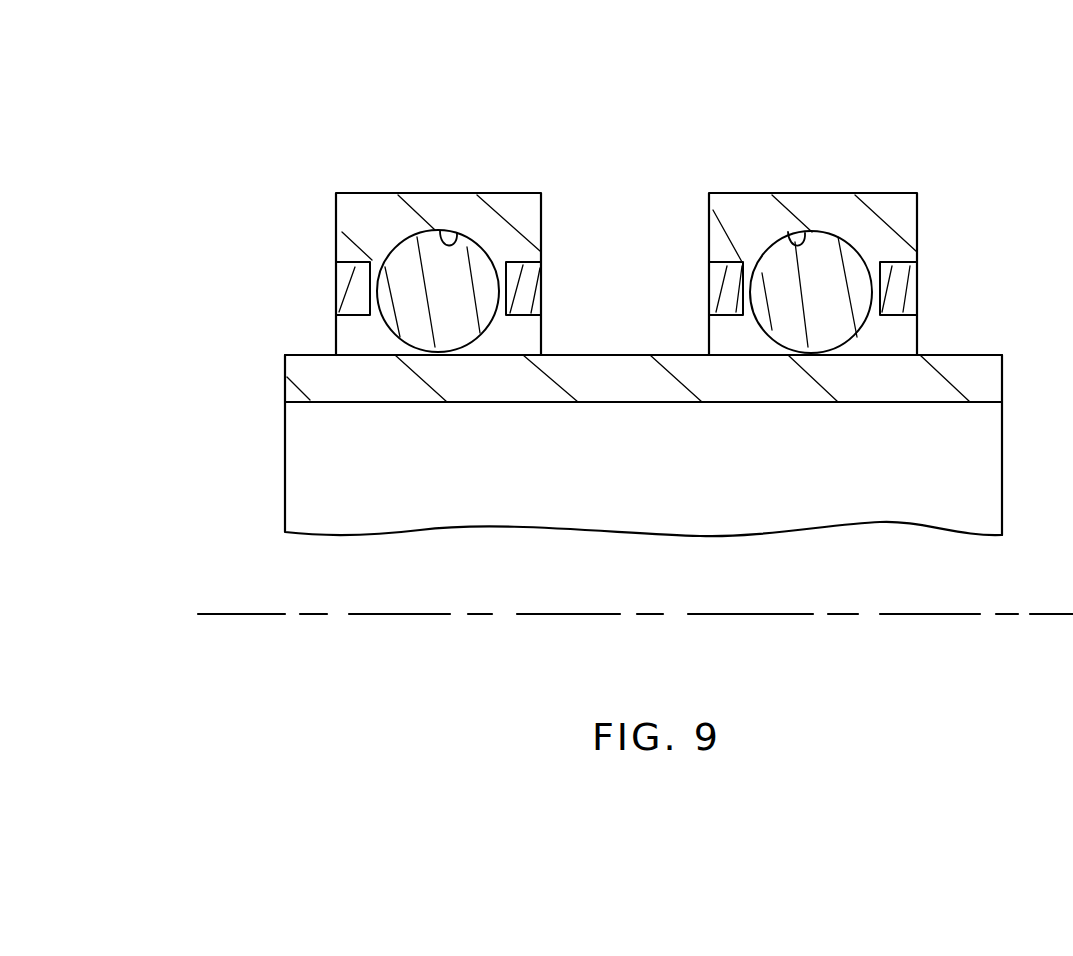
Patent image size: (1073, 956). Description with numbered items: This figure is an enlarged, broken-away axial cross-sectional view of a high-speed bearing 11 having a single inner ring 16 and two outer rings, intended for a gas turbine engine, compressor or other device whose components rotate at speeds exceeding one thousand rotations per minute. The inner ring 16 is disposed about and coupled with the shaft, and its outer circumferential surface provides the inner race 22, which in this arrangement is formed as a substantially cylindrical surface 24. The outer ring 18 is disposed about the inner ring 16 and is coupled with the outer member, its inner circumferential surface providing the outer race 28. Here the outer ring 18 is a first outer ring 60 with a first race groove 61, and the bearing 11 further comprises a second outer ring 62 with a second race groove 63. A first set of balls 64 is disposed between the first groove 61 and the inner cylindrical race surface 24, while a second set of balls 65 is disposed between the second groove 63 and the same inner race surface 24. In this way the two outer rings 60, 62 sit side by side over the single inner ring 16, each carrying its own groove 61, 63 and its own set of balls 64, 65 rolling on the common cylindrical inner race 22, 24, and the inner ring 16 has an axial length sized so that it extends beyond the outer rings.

The bearing 11 is at (238, 81).
The inner ring 16 is at (276, 384).
The outer ring 18 is at (630, 236).
The inner race 22 is at (620, 346).
The substantially cylindrical surface 24 is at (976, 354).
The outer race 28 is at (407, 252).
The first outer ring 60 is at (371, 186).
The first race groove 61 is at (453, 240).
The second outer ring 62 is at (877, 186).
The second race groove 63 is at (800, 232).
The first set of balls 64 is at (478, 268).
The second set of balls 65 is at (778, 260).